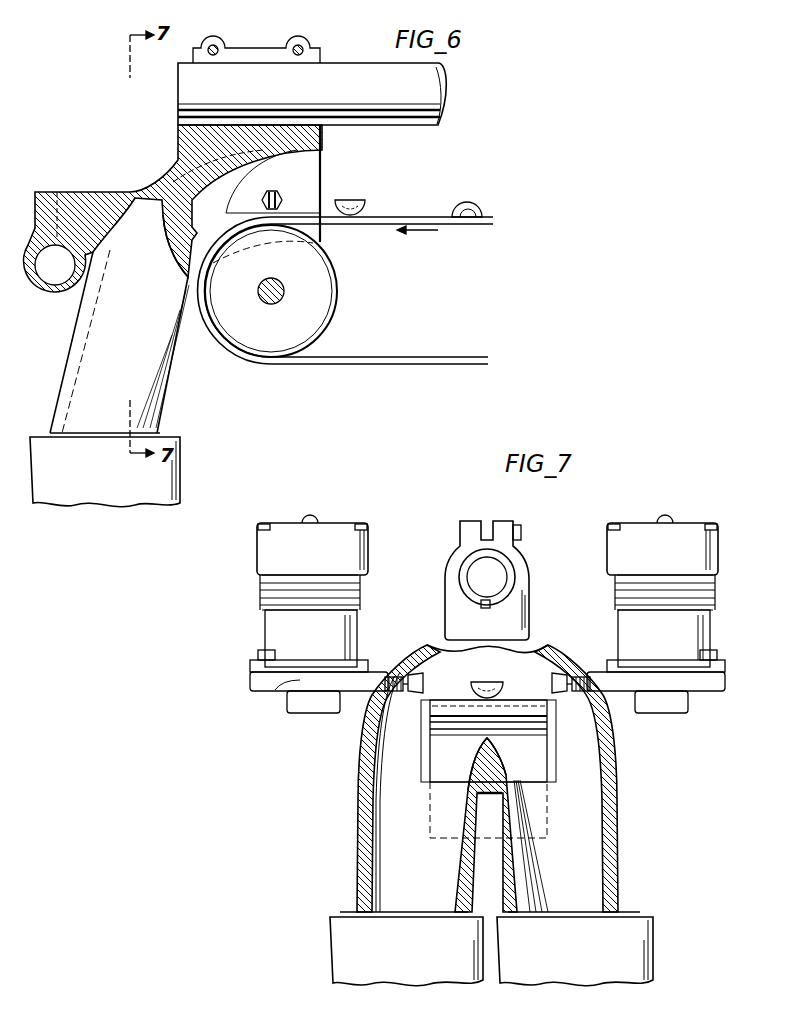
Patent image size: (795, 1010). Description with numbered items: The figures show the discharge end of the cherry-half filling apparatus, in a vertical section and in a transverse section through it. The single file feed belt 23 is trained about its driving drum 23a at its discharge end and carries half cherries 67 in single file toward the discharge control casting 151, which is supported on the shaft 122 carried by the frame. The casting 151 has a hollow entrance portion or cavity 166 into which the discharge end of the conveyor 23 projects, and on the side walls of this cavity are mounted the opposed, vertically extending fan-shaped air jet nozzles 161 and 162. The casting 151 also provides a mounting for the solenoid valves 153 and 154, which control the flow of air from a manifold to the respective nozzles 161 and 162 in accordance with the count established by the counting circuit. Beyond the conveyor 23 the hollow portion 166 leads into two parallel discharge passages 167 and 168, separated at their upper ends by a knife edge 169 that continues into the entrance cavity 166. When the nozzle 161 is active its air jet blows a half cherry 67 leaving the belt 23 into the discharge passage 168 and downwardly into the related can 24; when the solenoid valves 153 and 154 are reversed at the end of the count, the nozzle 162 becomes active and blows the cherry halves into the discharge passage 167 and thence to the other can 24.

In FIG. 6, the shaft 122 is at (343, 70).
In FIG. 7, the shaft 122 is at (500, 575).
In FIG. 6, the discharge control casting 151 is at (173, 160).
In FIG. 7, the discharge control casting 151 is at (615, 745).
In FIG. 6, the hollow entrance portion (cavity) 166 is at (318, 178).
In FIG. 6, the air jet nozzle 161 is at (270, 192).
In FIG. 7, the air jet nozzle 161 is at (412, 698).
In FIG. 7, the air jet nozzle 162 is at (552, 698).
In FIG. 6, the knife edge 169 is at (180, 256).
In FIG. 7, the knife edge 169 is at (477, 748).
In FIG. 6, the single file feed belt (conveyor) 23 is at (410, 217).
In FIG. 7, the single file feed belt (conveyor) 23 is at (444, 700).
In FIG. 6, the driving drum 23a is at (325, 285).
In FIG. 7, the driving drum 23a is at (550, 752).
In FIG. 6, the half cherry 67 is at (360, 201).
In FIG. 7, the half cherry 67 is at (490, 682).
In FIG. 6, the discharge passage 167 is at (80, 366).
In FIG. 7, the discharge passage 167 is at (403, 864).
In FIG. 7, the discharge passage 168 is at (595, 870).
In FIG. 6, the container (can) 24 is at (108, 494).
In FIG. 7, the container (can) 24 is at (417, 957).
In FIG. 7, the solenoid valve 153 is at (265, 548).
In FIG. 7, the solenoid valve 154 is at (705, 560).